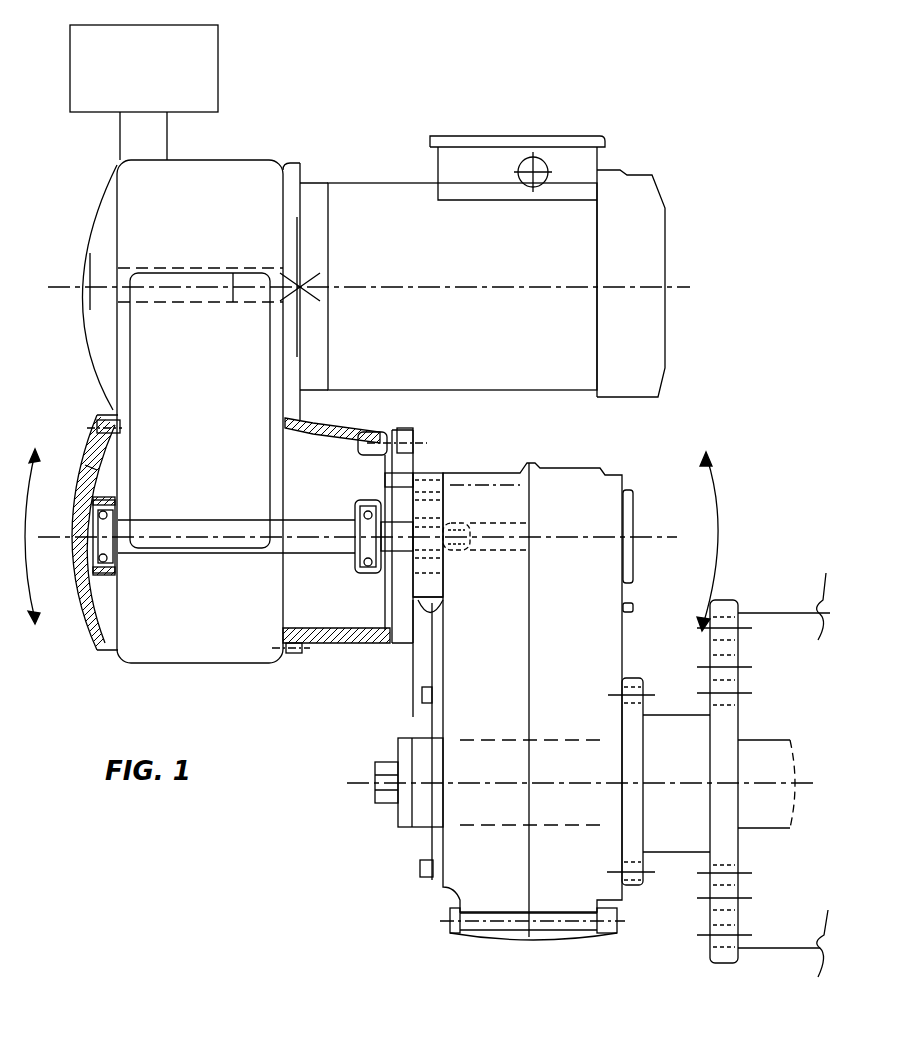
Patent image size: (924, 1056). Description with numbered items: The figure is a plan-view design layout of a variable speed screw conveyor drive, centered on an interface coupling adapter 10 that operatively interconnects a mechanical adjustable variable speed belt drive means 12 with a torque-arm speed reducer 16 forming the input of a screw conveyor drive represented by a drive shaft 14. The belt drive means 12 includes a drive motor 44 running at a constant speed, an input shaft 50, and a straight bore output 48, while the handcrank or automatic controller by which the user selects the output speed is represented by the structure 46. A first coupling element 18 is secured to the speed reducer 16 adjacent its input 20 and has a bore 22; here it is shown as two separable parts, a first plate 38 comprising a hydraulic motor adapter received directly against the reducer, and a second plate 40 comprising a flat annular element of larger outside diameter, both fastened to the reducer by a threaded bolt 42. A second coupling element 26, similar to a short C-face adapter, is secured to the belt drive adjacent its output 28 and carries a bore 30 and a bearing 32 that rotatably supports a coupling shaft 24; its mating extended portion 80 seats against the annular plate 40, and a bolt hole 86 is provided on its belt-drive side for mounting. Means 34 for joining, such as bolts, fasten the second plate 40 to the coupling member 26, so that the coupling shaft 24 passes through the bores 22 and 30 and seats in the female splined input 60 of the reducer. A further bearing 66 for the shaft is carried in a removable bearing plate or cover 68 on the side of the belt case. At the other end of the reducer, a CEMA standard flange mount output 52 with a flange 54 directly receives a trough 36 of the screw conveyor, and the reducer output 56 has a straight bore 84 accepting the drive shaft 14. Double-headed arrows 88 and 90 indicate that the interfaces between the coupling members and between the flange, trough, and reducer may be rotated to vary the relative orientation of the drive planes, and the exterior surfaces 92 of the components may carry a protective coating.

The interface coupling adapter 10 is at (326, 724).
The mechanical adjustable variable speed belt drive means 12 is at (358, 98).
The drive shaft 14 is at (748, 741).
The torque-arm speed reducer 16 is at (678, 426).
The first coupling element 18 is at (401, 428).
The input 20 is at (462, 544).
The bore 22 is at (423, 542).
The coupling shaft 24 is at (285, 523).
The second coupling element 26 is at (317, 421).
The output 28 is at (272, 559).
The bore 30 is at (380, 501).
The bearing 32 is at (346, 573).
The means for joining 34 is at (413, 438).
The trough 36 is at (810, 614).
The first plate 38 is at (450, 599).
The second plate 40 is at (398, 646).
The threaded bolt 42 is at (403, 474).
The drive motor 44 is at (461, 254).
The handcrank or automatic controller means 46 is at (154, 90).
The straight bore output 48 is at (180, 549).
The input shaft 50 is at (170, 268).
The screw conveyor flange mount output 52 is at (661, 670).
The flange 54 is at (728, 601).
The output 56 is at (651, 896).
The female splined input 60 is at (478, 529).
The bearing 66 is at (127, 575).
The bearing plate or cover 68 is at (85, 465).
The extended portion 80 is at (380, 633).
The straight bore 84 is at (496, 813).
The bolt hole 86 is at (284, 657).
The double-headed arrow 88 is at (30, 588).
The double-headed arrow 90 is at (718, 538).
The exterior surfaces 92 is at (217, 215).